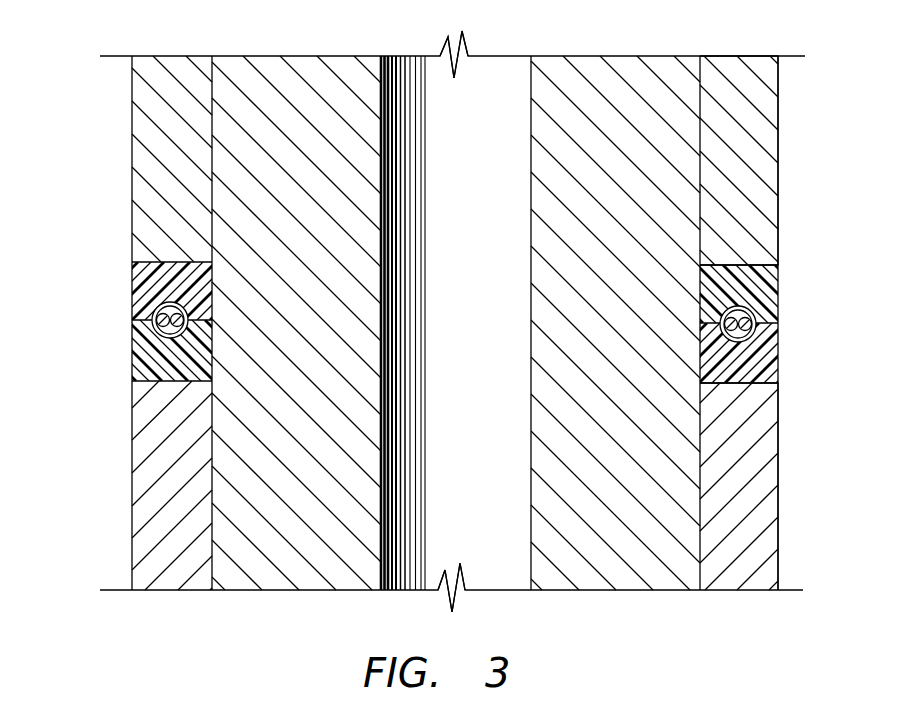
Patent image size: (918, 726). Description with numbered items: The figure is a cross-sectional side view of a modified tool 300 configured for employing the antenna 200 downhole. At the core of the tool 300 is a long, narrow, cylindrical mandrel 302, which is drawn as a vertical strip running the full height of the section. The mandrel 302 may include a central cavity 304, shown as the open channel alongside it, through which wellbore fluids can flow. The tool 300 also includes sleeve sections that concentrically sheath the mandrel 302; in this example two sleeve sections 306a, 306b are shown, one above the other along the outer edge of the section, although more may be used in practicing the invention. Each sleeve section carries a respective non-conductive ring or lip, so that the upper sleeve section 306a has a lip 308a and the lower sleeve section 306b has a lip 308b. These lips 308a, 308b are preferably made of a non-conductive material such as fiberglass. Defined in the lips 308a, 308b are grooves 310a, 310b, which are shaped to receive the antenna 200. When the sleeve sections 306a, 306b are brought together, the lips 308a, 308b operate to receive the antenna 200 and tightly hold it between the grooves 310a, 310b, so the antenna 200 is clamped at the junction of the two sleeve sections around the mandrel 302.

The tool 300 is at (98, 227).
The antenna 200 is at (152, 324).
The mandrel 302 is at (299, 67).
The central cavity 304 is at (483, 73).
The sleeve section 306a is at (790, 160).
The sleeve section 306b is at (790, 469).
The non-conductive ring or lip 308a is at (778, 286).
The non-conductive ring or lip 308b is at (778, 356).
The groove 310a is at (753, 311).
The groove 310b is at (752, 336).